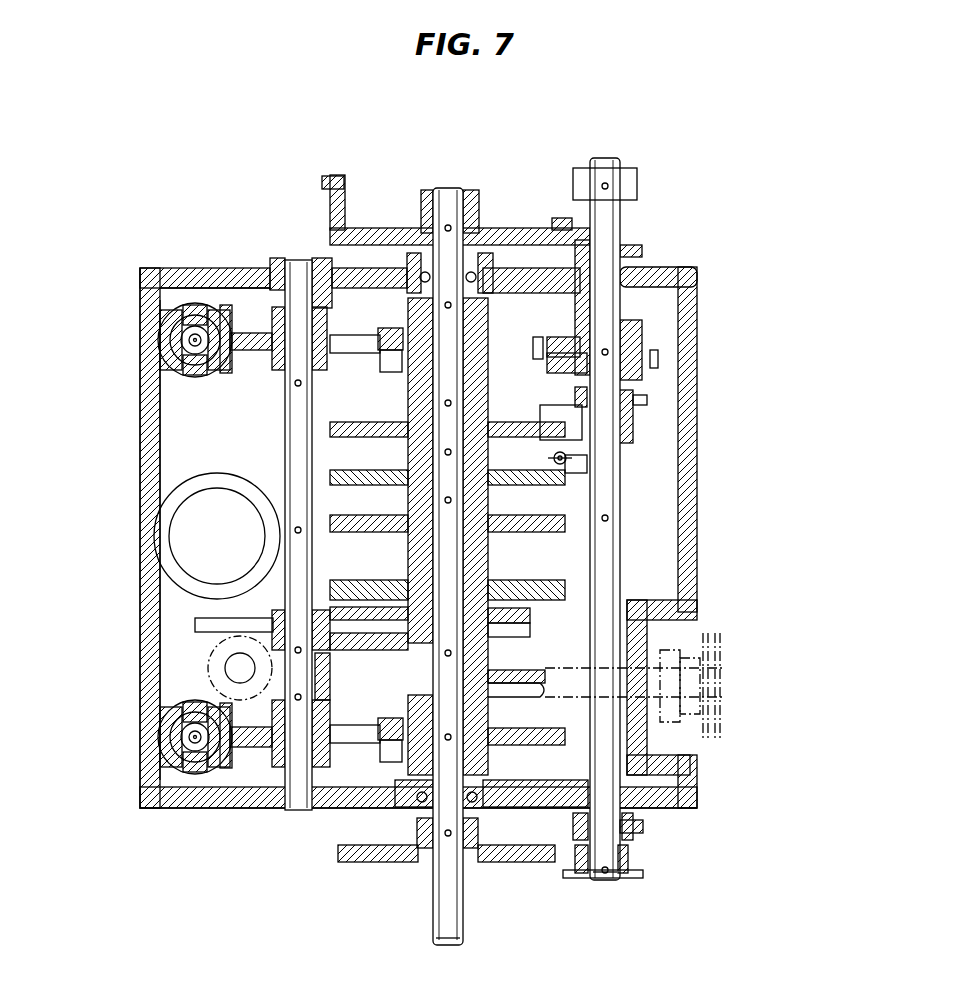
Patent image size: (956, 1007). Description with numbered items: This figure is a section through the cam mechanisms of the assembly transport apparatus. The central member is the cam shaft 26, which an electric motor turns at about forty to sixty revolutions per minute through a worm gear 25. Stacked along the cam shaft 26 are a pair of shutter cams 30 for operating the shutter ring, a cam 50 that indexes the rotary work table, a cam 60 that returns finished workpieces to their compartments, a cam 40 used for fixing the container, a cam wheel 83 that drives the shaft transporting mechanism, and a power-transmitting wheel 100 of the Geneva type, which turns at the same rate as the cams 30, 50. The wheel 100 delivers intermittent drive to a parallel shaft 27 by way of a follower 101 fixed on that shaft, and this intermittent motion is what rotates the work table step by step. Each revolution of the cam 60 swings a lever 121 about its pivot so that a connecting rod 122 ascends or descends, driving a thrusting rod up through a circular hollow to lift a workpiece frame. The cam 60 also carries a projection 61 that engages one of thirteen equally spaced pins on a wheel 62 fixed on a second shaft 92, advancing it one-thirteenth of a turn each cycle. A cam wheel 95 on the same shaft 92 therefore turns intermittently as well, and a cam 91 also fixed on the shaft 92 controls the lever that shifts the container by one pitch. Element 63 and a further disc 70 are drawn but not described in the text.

The worm gear 25 is at (518, 682).
The cam shaft 26 is at (450, 200).
The shaft 27 is at (295, 812).
The shutter cams 30 is at (364, 426).
The cam 40 is at (400, 862).
The cam 50 is at (385, 472).
The cam 60 is at (366, 336).
The projection 61 is at (553, 352).
The wheel 62 is at (632, 350).
The pin 63 is at (658, 360).
The disc 70 is at (532, 590).
The cam wheel 83 is at (385, 240).
The cam 91 is at (632, 185).
The shaft 92 is at (612, 222).
The cam wheel 95 is at (628, 860).
The power-transmitting wheel 100 is at (518, 628).
The follower 101 is at (200, 625).
The lever 121 is at (262, 352).
The connecting rod 122 is at (192, 341).